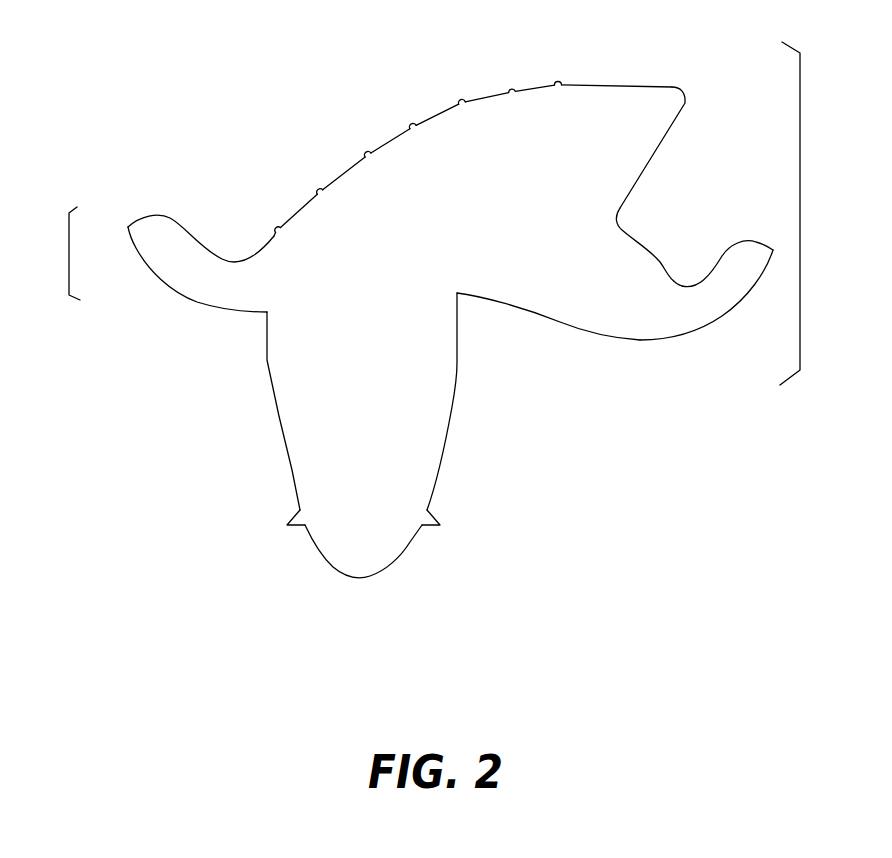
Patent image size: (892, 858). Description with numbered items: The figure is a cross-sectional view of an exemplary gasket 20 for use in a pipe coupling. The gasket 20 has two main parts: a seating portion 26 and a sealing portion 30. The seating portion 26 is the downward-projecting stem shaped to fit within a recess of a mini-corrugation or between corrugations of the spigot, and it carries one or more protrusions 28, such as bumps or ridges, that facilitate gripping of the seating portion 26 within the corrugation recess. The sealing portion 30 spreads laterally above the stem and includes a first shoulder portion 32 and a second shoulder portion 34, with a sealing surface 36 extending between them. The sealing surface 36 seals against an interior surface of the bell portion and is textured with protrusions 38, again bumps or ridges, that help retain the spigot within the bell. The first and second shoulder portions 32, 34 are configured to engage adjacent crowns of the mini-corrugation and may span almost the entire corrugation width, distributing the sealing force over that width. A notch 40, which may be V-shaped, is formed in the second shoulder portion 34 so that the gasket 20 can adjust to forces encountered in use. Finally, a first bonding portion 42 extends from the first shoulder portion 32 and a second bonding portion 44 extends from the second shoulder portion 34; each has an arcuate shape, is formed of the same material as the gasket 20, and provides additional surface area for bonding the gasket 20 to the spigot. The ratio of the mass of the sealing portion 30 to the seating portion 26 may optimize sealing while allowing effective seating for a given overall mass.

The gasket 20 is at (179, 100).
The seating portion 26 is at (378, 448).
The protrusions 28 is at (433, 510).
The sealing portion 30 is at (486, 191).
The first shoulder portion 32 is at (69, 252).
The second shoulder portion 34 is at (800, 200).
The sealing surface 36 is at (393, 146).
The protrusions 38 is at (462, 101).
The notch 40 is at (642, 220).
The first bonding portion 42 is at (172, 264).
The second bonding portion 44 is at (698, 312).